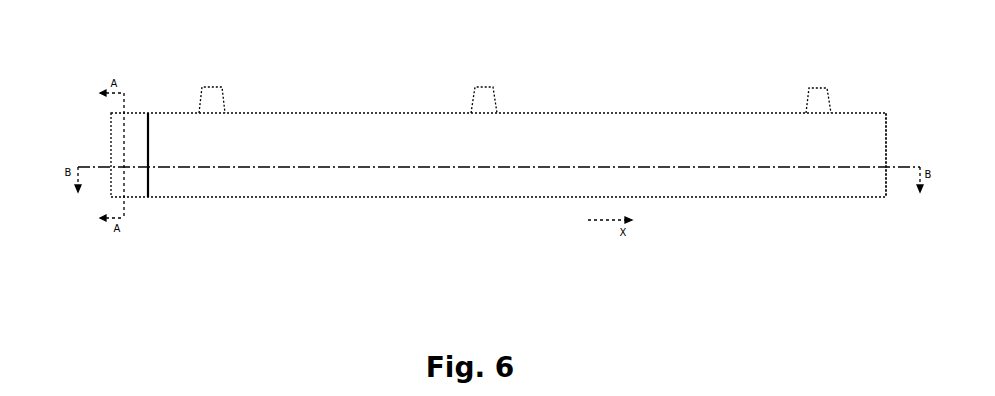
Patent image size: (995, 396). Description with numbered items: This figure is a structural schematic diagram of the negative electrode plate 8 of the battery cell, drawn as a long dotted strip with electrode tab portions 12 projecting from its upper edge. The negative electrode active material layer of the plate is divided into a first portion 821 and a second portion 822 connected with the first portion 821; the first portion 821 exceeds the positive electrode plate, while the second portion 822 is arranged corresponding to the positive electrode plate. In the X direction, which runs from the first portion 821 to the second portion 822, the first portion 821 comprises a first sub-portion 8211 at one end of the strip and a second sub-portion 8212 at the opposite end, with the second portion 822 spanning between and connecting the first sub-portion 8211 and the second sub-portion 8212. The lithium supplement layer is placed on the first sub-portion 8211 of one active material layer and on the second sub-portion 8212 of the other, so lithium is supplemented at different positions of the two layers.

The negative electrode plate 8 is at (498, 117).
The electrode tab portion 12 is at (217, 97).
The first portion 821 is at (899, 294).
The first sub-portion 8211 is at (131, 111).
The second sub-portion 8212 is at (864, 110).
The second portion 822 is at (413, 124).